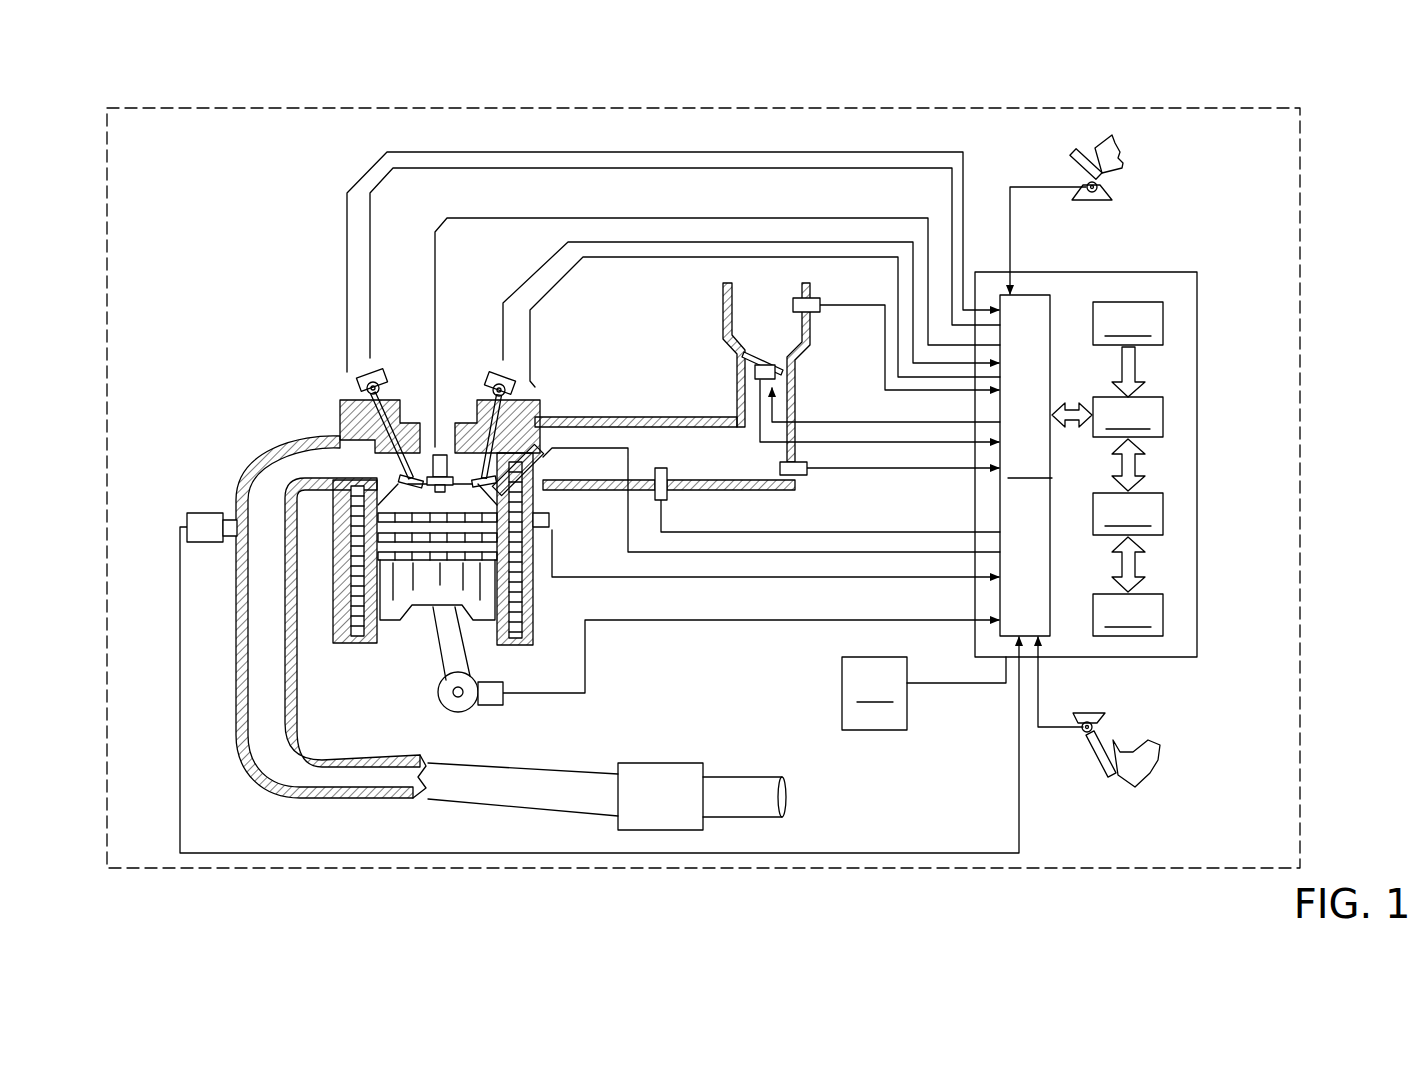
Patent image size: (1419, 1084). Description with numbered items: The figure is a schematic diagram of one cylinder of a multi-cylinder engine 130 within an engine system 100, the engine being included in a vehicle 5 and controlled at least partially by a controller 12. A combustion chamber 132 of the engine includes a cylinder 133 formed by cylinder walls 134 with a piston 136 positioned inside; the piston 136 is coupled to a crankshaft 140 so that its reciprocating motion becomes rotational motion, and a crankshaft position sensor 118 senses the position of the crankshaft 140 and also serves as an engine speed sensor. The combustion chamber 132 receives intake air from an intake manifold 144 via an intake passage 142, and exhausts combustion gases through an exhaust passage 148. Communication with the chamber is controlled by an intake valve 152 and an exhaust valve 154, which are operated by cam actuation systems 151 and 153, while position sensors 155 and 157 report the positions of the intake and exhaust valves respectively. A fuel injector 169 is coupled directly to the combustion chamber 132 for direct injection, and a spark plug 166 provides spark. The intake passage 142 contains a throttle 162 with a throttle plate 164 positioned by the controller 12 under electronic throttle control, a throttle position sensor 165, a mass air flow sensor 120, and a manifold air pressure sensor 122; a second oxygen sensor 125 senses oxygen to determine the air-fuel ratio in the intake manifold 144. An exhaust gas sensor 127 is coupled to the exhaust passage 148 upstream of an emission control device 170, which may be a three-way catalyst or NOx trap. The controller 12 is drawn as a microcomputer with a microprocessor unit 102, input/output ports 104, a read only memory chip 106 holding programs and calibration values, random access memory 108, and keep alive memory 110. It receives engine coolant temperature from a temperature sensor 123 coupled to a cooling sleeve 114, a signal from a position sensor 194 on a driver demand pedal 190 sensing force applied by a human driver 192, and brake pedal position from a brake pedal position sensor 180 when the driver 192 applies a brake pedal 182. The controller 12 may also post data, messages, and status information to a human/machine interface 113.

The vehicle 5 is at (176, 108).
The engine system 100 is at (1224, 171).
The controller 12 is at (1197, 276).
The microprocessor unit 102 is at (1163, 412).
The input/output ports 104 is at (1052, 304).
The read only memory chip 106 is at (1163, 322).
The random access memory 108 is at (1163, 513).
The keep alive memory 110 is at (1163, 615).
The human/machine interface 113 is at (874, 693).
The cooling sleeve 114 is at (529, 633).
The crankshaft position sensor 118 is at (495, 704).
The mass air flow sensor 120 is at (811, 298).
The manifold air pressure sensor 122 is at (801, 476).
The temperature sensor 123 is at (545, 529).
The second oxygen sensor 125 is at (666, 494).
The exhaust gas sensor 127 is at (186, 519).
The engine 130 is at (276, 354).
The combustion chamber 132 is at (410, 502).
The cylinder 133 is at (412, 634).
The cylinder walls 134 is at (382, 632).
The piston 136 is at (422, 592).
The crankshaft 140 is at (452, 708).
The intake passage 142 is at (746, 332).
The intake manifold 144 is at (668, 461).
The exhaust passage 148 is at (296, 472).
The cam actuation system 151 is at (490, 362).
The intake valve 152 is at (492, 476).
The cam actuation system 153 is at (375, 357).
The exhaust valve 154 is at (385, 478).
The position sensor 155 is at (517, 391).
The position sensor 157 is at (355, 390).
The throttle 162 is at (776, 362).
The throttle plate 164 is at (738, 357).
The throttle position sensor 165 is at (756, 380).
The spark plug 166 is at (440, 443).
The fuel injector 169 is at (542, 491).
The emission control device 170 is at (702, 796).
The brake pedal position sensor 180 is at (1080, 727).
The brake pedal 182 is at (1108, 770).
The driver demand pedal 190 is at (1074, 162).
The human driver 192 is at (1120, 153).
The position sensor 194 is at (1100, 188).